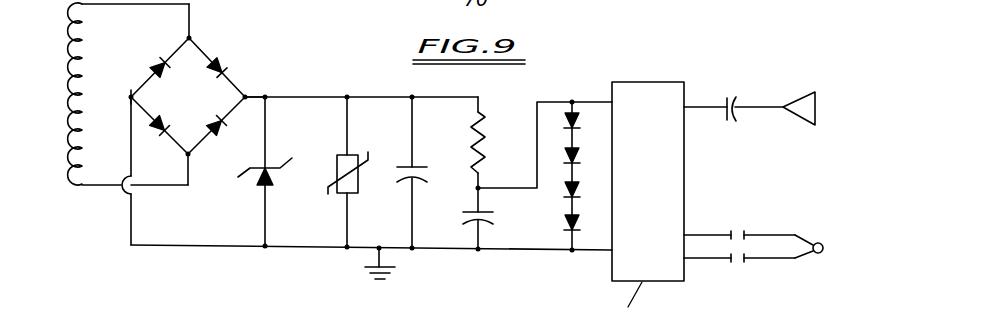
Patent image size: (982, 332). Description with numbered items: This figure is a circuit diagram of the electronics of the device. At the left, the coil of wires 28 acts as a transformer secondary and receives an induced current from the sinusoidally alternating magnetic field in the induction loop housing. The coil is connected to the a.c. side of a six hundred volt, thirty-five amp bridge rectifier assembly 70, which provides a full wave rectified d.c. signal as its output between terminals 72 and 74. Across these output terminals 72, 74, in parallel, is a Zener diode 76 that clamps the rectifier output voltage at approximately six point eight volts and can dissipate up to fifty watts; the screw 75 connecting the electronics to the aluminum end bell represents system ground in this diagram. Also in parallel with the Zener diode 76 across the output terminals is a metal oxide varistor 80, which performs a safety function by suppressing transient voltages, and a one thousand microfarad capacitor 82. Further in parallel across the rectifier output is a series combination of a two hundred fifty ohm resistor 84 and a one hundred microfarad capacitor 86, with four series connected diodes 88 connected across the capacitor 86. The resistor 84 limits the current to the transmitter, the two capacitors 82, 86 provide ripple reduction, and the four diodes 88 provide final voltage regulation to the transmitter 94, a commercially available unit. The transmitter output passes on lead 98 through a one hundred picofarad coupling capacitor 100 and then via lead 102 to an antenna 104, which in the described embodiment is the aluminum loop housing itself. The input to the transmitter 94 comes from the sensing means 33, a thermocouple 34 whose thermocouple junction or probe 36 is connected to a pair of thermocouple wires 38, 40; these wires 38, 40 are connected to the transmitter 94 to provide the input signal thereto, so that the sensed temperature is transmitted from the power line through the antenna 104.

The coil of wires 28 is at (76, 63).
The output terminal 72 is at (129, 97).
The bridge rectifier assembly 70 is at (175, 105).
The output terminal 74 is at (248, 93).
The Zener diode 76 is at (259, 187).
The metal oxide varistor 80 is at (343, 196).
The capacitor 82 is at (407, 183).
The resistor 84 is at (472, 149).
The capacitor 86 is at (464, 213).
The system ground 75 is at (375, 257).
The series connected diodes 88 is at (579, 152).
The transmitter 94 is at (637, 186).
The lead 98 is at (698, 103).
The coupling capacitor 100 is at (734, 96).
The lead 102 is at (757, 108).
The antenna 104 is at (827, 108).
The thermocouple wire 38 is at (712, 232).
The thermocouple wire 40 is at (714, 259).
The sensing means 33 is at (797, 223).
The thermocouple 34 is at (789, 279).
The thermocouple junction or probe 36 is at (820, 255).